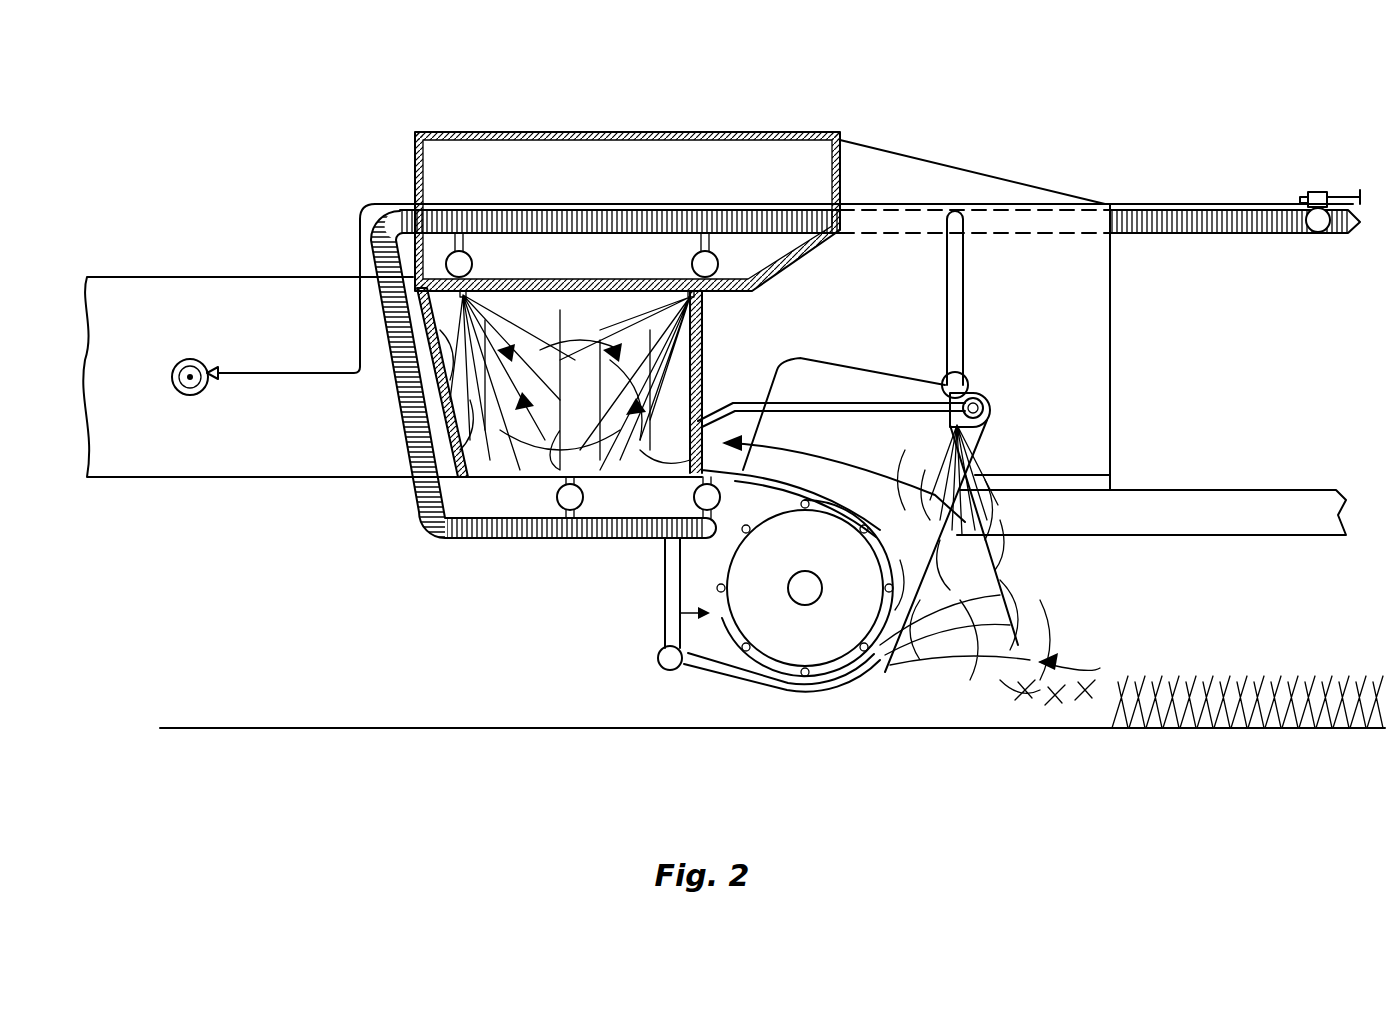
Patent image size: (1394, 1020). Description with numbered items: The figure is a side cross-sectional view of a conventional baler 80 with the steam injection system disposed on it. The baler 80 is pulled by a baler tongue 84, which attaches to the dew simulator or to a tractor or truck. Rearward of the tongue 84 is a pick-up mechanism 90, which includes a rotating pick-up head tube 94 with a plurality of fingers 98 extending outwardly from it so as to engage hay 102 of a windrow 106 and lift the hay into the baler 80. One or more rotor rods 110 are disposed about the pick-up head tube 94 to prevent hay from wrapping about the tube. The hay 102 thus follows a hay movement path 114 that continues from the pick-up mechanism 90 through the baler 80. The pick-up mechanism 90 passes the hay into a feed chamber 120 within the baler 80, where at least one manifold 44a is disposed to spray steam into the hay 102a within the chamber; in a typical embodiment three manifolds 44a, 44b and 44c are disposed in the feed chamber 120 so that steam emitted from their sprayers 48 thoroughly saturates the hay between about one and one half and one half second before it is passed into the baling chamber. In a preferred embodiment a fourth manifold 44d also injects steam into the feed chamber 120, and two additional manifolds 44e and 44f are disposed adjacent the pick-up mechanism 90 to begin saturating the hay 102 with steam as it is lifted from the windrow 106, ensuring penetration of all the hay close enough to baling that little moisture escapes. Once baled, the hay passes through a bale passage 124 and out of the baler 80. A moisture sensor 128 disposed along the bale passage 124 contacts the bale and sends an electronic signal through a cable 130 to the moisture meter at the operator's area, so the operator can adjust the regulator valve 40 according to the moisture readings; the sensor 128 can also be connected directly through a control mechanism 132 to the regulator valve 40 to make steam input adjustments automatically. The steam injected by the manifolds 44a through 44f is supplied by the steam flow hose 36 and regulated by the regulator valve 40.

The baler 80 is at (605, 128).
The steam flow hose 36 is at (736, 211).
The control mechanism 132 is at (1303, 194).
The regulator valve 40 is at (1324, 192).
The cable 130 is at (358, 250).
The moisture sensor 128 is at (197, 396).
The bale passage 124 is at (254, 465).
The baler tongue 84 is at (1215, 490).
The manifold 44a is at (566, 512).
The manifold 44b is at (695, 497).
The manifold 44c is at (474, 265).
The fourth manifold 44d is at (692, 265).
The manifold 44e is at (970, 382).
The manifold 44f is at (660, 668).
The pick-up mechanism 90 is at (662, 642).
The fingers 98 is at (665, 592).
The feed chamber 120 is at (440, 440).
The hay 102a is at (705, 340).
The sprayers 48 is at (415, 330).
The hay movement path 114 is at (847, 458).
The pick-up head tube 94 is at (783, 650).
The rotor rods 110 is at (736, 688).
The hay 102 is at (1028, 608).
The windrow 106 is at (1252, 673).